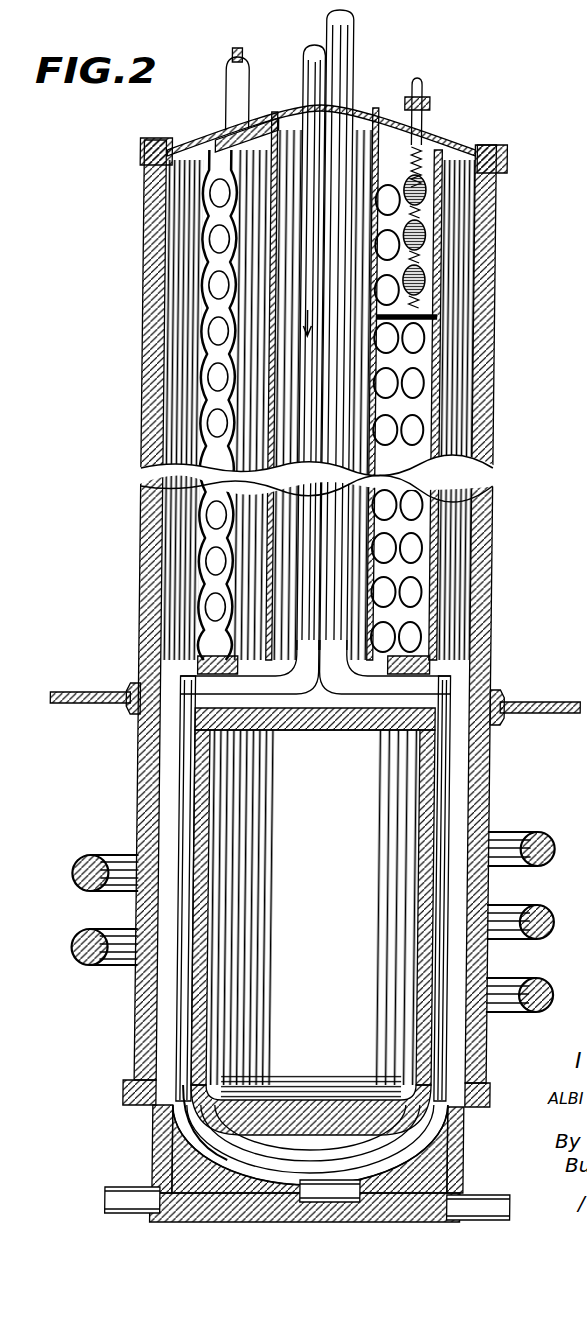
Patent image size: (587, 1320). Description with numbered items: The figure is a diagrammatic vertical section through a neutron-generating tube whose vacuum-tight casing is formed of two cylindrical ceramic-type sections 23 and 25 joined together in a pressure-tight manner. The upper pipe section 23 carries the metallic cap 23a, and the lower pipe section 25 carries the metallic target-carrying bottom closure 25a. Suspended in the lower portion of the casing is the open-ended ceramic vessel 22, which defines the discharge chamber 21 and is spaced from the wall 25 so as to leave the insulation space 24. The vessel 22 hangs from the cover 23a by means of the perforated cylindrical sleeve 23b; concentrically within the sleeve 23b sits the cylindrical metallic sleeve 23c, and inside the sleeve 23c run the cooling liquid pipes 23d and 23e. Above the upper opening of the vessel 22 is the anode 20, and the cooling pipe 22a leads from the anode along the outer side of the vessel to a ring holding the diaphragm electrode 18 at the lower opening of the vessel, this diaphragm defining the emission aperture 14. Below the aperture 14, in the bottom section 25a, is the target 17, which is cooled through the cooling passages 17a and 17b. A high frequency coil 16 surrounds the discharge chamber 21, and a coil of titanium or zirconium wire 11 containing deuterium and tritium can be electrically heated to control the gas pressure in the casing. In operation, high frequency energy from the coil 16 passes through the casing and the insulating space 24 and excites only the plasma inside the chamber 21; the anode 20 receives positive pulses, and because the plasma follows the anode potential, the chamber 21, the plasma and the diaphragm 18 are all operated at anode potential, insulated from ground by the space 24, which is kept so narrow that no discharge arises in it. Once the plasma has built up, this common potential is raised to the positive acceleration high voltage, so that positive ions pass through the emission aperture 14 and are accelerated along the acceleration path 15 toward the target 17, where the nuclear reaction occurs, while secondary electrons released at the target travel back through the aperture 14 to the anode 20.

The coil of titanium or zirconium wire 11 is at (425, 224).
The emission aperture 14 is at (317, 1110).
The acceleration path 15 is at (188, 1165).
The high frequency coil 16 is at (556, 920).
The target 17 is at (335, 1190).
The cooling passage 17a is at (483, 1195).
The cooling passage 17b is at (126, 1192).
The diaphragm electrode 18 is at (184, 1122).
The anode 20 is at (332, 700).
The discharge chamber 21 is at (336, 908).
The vessel 22 is at (211, 768).
The cooling pipe 22a is at (452, 780).
The cylindrical ceramic-type pipe section 23 is at (502, 492).
The metallic cap 23a is at (422, 130).
The perforated cylindrical sleeve 23b is at (220, 214).
The cylindrical metallic sleeve 23c is at (382, 416).
The cooling liquid pipe 23d is at (312, 66).
The cooling liquid pipe 23e is at (347, 54).
The insulation space 24 is at (178, 905).
The cylindrical ceramic-type pipe section 25 is at (160, 1010).
The target-carrying bottom closure 25a is at (474, 1160).